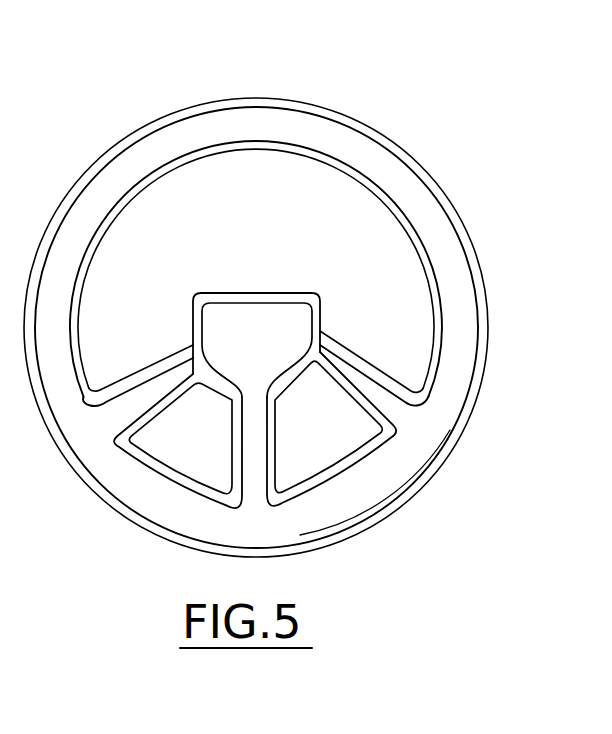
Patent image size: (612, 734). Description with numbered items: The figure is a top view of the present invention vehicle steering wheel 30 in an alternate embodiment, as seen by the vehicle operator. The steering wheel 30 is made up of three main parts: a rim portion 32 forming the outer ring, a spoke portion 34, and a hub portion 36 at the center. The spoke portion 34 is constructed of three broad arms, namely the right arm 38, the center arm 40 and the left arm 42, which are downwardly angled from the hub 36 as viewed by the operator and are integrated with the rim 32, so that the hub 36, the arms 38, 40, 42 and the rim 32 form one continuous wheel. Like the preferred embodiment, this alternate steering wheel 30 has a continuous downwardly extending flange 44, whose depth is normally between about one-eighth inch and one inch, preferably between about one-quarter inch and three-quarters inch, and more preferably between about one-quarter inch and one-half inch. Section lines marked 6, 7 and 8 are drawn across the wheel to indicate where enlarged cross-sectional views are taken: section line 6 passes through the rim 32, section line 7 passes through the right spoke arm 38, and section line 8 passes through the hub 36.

The vehicle steering wheel 30 is at (327, 84).
The rim portion 32 is at (402, 182).
The spoke portion 34 is at (333, 358).
The hub portion 36 is at (217, 323).
The right arm 38 is at (392, 410).
The center arm 40 is at (253, 472).
The left arm 42 is at (144, 390).
The continuous downwardly extending flange 44 is at (343, 167).
The section line 6- 6 is at (251, 182).
The section line 7- 7 is at (346, 438).
The section line 8- 8 is at (257, 347).